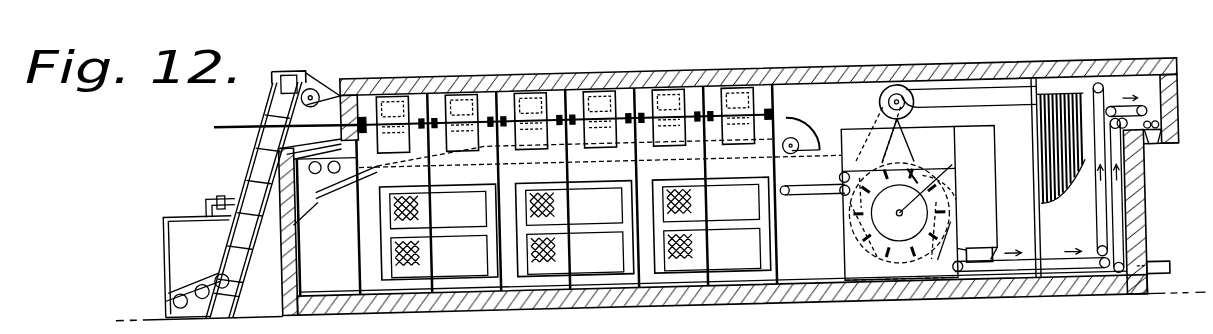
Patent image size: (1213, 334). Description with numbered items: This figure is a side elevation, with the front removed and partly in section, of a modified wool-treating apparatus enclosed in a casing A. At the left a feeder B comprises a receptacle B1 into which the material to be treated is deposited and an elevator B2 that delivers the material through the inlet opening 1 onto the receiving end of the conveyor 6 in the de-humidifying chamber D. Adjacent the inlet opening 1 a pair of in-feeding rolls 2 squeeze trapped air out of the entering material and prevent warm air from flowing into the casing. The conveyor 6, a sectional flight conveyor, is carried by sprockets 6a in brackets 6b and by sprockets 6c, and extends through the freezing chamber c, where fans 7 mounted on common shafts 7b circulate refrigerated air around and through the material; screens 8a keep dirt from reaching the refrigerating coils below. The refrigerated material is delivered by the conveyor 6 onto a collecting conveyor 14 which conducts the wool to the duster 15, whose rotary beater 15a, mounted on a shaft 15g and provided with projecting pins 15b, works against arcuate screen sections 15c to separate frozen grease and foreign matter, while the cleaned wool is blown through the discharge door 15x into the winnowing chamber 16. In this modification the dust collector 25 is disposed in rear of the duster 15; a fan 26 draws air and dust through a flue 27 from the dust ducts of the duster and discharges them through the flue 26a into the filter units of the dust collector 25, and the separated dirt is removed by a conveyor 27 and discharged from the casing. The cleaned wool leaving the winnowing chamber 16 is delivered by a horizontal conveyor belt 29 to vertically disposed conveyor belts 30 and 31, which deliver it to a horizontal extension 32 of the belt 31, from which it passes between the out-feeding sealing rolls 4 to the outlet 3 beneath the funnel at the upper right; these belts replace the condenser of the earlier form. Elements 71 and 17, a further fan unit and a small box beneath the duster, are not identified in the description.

The casing A is at (683, 79).
The de-humidifying chamber D is at (340, 287).
The inlet opening 1 is at (330, 146).
The in-feeding rolls 2 is at (313, 174).
The conveyor 6 is at (342, 214).
The sprockets 6a is at (295, 247).
The brackets 6b is at (290, 224).
The sprockets 6c is at (792, 165).
The fans 7 is at (527, 98).
The last carrier 71 is at (738, 99).
The common shafts 7b is at (222, 122).
The screens 8a is at (475, 268).
The freezing chamber c is at (625, 272).
The feeder B is at (242, 170).
The receptacle B1 is at (178, 212).
The elevator B2 is at (246, 154).
The collecting conveyor 14 is at (809, 207).
The duster 15 is at (849, 243).
The rotary beater 15a is at (955, 183).
The projecting pins 15b is at (905, 190).
The arcuate screen sections 15c is at (846, 266).
The shaft 15g is at (940, 208).
The discharge door 15x is at (954, 243).
The winnowing chamber 16 is at (1020, 196).
The discharge box 17 is at (986, 280).
The dust collector 25 is at (1063, 118).
The fan 26 is at (898, 100).
The flue 26a is at (957, 104).
The flue 27 is at (1158, 282).
The horizontal conveyor belt 29 is at (1050, 278).
The vertical conveyor belt 30 is at (1096, 216).
The vertical conveyor belt 31 is at (1112, 231).
The horizontal extension 32 is at (1115, 125).
The outlet 3 is at (1151, 160).
The out-feeding sealing rolls 4 is at (1159, 140).